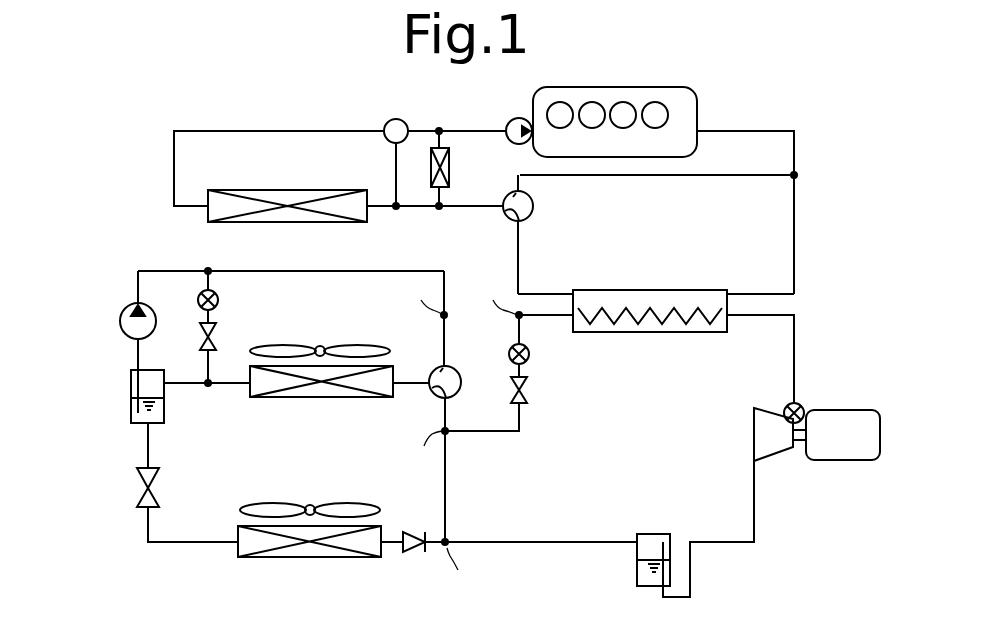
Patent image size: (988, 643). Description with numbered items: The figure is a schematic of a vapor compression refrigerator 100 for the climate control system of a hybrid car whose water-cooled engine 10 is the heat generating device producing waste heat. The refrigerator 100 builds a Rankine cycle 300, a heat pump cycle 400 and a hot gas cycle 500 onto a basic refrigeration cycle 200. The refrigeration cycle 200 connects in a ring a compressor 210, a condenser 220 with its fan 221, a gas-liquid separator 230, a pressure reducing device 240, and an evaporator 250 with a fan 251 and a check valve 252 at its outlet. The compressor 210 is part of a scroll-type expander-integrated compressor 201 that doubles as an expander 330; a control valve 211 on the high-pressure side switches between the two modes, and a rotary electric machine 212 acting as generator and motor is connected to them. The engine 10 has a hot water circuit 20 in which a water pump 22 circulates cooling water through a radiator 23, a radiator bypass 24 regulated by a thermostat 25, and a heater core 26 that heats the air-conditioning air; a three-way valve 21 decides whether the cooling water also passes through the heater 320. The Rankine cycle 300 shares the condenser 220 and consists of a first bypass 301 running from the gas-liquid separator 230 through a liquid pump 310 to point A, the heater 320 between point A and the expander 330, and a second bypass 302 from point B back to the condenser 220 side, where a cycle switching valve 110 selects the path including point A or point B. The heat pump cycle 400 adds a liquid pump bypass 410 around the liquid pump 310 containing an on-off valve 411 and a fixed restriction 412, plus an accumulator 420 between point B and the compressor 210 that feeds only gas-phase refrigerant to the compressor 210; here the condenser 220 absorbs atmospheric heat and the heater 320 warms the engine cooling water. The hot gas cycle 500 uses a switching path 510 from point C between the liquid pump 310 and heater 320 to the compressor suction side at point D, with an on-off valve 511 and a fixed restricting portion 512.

The engine 10 is at (697, 93).
The hot water circuit 20 is at (359, 182).
The three-way valve 21 is at (533, 204).
The water pump 22 is at (518, 118).
The radiator 23 is at (248, 190).
The radiator bypass 24 is at (396, 158).
The thermostat 25 is at (394, 119).
The heater core 26 is at (449, 166).
The vapor compression refrigerator 100 is at (356, 399).
The cycle switching valve 110 is at (454, 369).
The refrigeration cycle 200 is at (808, 334).
The expander-integrated compressor 201 is at (790, 429).
The compressor 210 is at (730, 442).
The control valve 211 is at (783, 410).
The rotary electric machine 212 is at (844, 460).
The condenser 220 is at (280, 397).
The fan 221 is at (341, 344).
The gas-liquid separator 230 is at (131, 402).
The pressure reducing device 240 is at (137, 495).
The evaporator 250 is at (306, 557).
The fan 251 is at (268, 505).
The check valve 252 is at (411, 557).
The Rankine cycle 300 is at (356, 426).
The first bypass 301 is at (282, 271).
The second bypass 302 is at (447, 477).
The liquid pump 310 is at (120, 315).
The heater 320 is at (638, 332).
The expander 330 is at (754, 436).
The heat pump cycle 400 is at (331, 310).
The liquid pump bypass 410 is at (210, 283).
The on-off valve 411 is at (206, 305).
The restriction 412 is at (216, 334).
The accumulator 420 is at (637, 568).
The hot gas cycle 500 is at (727, 287).
The switching path 510 is at (529, 371).
The on-off valve 511 is at (530, 355).
The restricting portion 512 is at (562, 393).